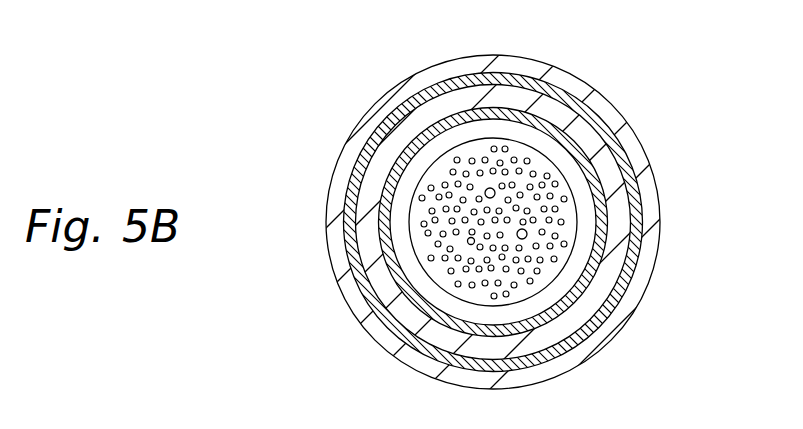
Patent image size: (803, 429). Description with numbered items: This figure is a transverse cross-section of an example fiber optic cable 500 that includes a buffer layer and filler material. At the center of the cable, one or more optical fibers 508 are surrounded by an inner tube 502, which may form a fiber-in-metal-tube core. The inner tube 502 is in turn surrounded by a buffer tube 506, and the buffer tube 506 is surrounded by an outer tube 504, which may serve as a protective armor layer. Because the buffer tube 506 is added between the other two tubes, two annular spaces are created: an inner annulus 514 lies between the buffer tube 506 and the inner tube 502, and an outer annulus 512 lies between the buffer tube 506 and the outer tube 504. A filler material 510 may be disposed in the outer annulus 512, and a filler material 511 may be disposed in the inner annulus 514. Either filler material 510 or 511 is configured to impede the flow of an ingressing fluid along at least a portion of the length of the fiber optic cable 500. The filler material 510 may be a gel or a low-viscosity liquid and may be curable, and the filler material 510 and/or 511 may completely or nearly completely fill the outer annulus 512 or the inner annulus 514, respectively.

The fiber optic cable 500 is at (272, 52).
The inner tube 502 is at (430, 160).
The outer tube 504 is at (335, 189).
The buffer tube 506 is at (372, 235).
The optical fibers 508 is at (468, 242).
The filler material 510 is at (637, 195).
The filler material 511 is at (593, 263).
The outer annulus 512 is at (636, 156).
The inner annulus 514 is at (613, 230).